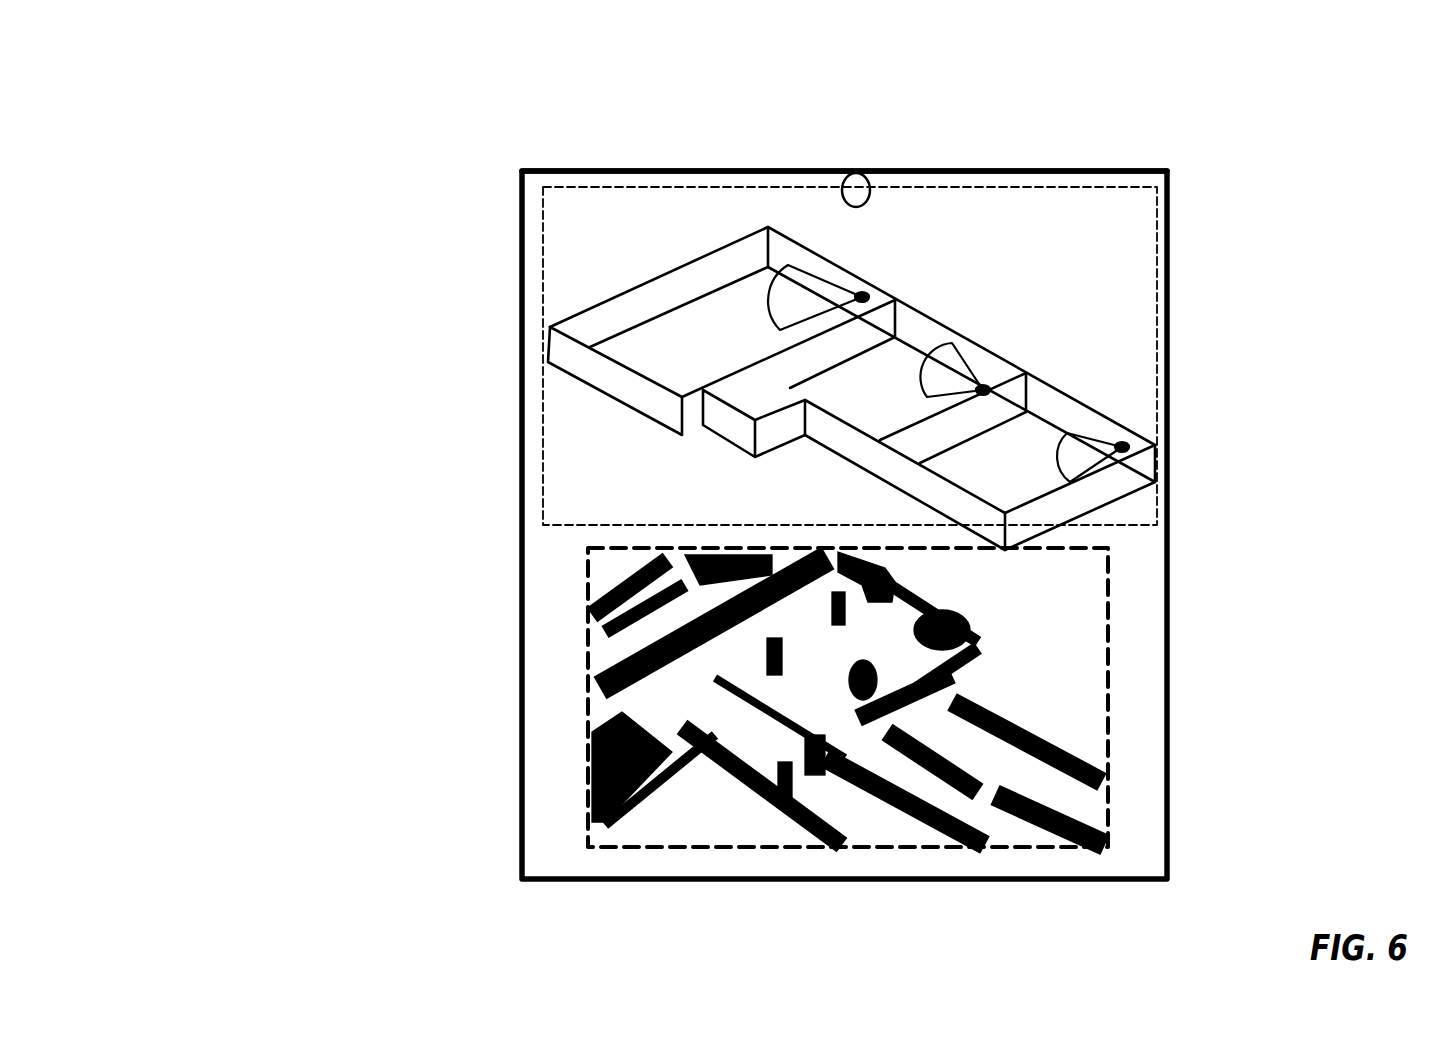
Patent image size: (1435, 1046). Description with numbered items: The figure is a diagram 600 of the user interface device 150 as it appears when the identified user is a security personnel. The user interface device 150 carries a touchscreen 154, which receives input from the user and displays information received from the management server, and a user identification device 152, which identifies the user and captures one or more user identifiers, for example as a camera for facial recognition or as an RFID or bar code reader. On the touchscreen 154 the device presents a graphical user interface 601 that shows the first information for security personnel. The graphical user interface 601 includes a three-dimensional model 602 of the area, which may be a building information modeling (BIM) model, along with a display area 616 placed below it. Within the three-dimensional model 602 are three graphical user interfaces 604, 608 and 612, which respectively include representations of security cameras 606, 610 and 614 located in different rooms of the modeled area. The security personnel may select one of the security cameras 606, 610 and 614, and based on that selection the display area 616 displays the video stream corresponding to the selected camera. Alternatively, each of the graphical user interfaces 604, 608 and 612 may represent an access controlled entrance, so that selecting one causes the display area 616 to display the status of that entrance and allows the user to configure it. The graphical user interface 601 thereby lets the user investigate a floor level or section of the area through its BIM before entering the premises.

The diagram 600 is at (108, 122).
The user interface device 150 is at (573, 151).
The user identification device 152 is at (868, 173).
The touchscreen 154 is at (522, 172).
The graphical user interface 601 is at (533, 217).
The three-dimensional model 602 is at (543, 250).
The graphical user interface 604 is at (820, 252).
The security camera 606 is at (883, 290).
The graphical user interface 608 is at (950, 328).
The security camera 610 is at (1000, 383).
The graphical user interface 612 is at (1058, 390).
The security camera 614 is at (1135, 446).
The display area 616 is at (585, 687).